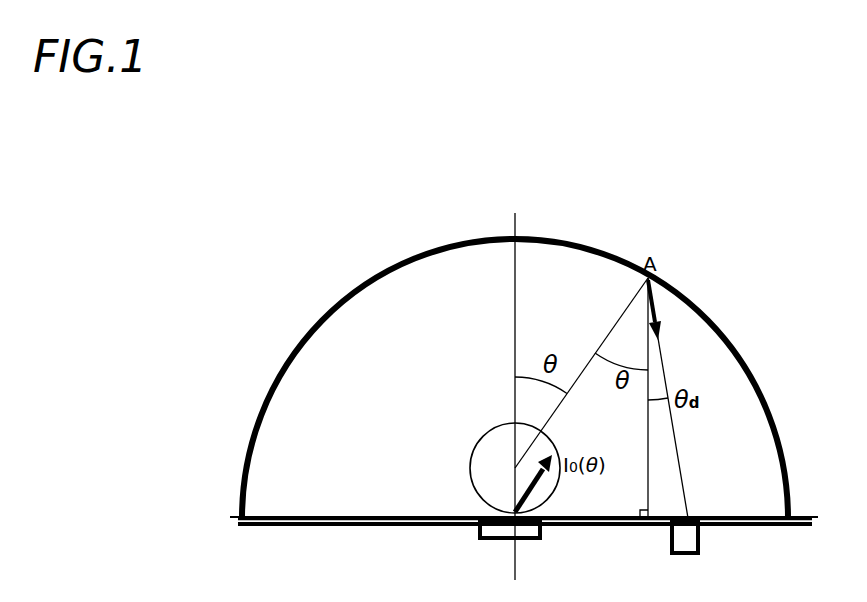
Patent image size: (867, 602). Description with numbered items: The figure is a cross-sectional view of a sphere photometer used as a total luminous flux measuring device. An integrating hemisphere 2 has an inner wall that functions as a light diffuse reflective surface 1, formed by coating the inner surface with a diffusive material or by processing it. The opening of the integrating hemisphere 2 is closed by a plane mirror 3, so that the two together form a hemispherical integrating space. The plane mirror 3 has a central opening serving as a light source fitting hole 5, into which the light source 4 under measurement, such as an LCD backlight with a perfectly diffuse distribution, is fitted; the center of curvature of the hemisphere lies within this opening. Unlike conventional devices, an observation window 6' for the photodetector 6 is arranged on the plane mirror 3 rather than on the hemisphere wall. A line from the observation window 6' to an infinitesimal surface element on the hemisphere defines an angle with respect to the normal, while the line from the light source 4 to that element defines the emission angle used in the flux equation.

The light diffuse reflective surface 1 is at (393, 272).
The integrating hemisphere 2 is at (404, 262).
The plane mirror 3 is at (360, 527).
The light source 4 is at (510, 544).
The light source fitting hole 5 is at (474, 515).
The photodetector 6 is at (696, 546).
The observation window 6' is at (686, 398).